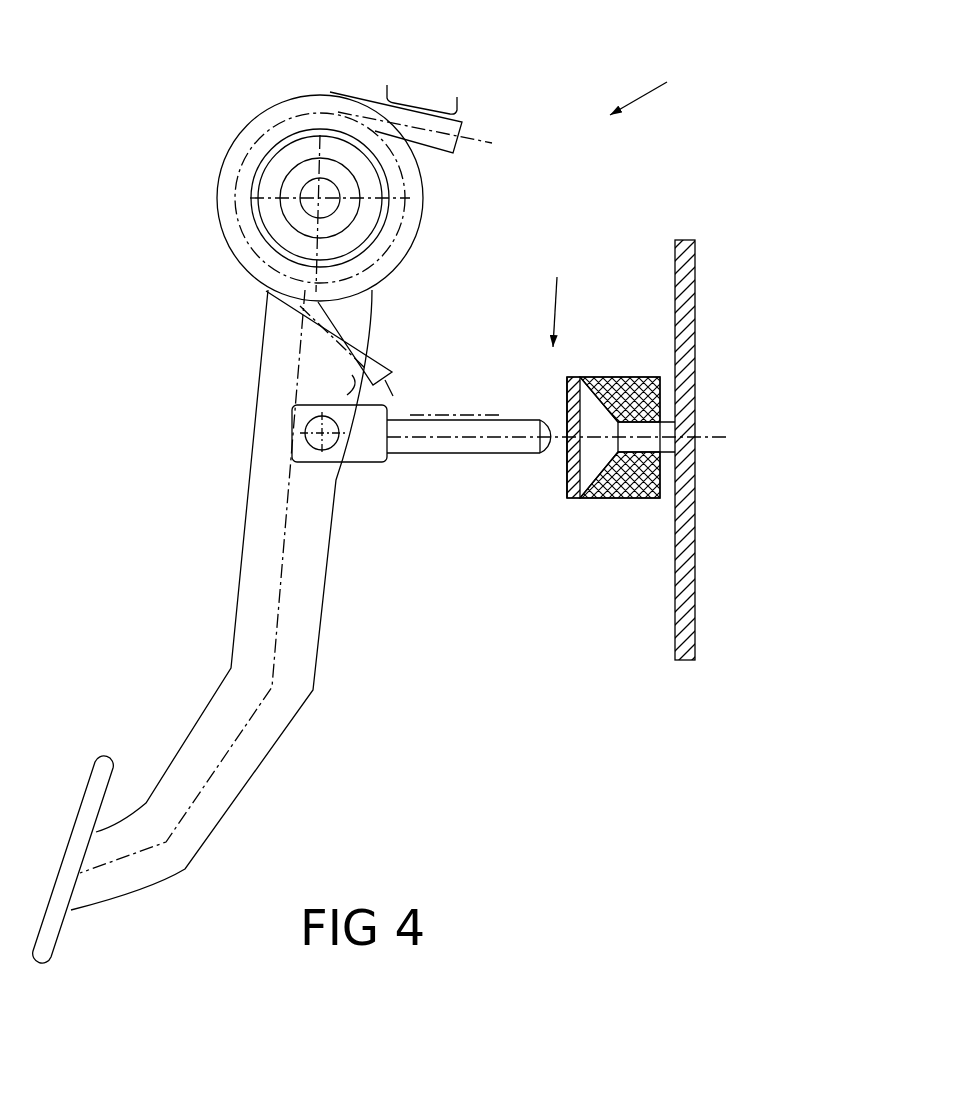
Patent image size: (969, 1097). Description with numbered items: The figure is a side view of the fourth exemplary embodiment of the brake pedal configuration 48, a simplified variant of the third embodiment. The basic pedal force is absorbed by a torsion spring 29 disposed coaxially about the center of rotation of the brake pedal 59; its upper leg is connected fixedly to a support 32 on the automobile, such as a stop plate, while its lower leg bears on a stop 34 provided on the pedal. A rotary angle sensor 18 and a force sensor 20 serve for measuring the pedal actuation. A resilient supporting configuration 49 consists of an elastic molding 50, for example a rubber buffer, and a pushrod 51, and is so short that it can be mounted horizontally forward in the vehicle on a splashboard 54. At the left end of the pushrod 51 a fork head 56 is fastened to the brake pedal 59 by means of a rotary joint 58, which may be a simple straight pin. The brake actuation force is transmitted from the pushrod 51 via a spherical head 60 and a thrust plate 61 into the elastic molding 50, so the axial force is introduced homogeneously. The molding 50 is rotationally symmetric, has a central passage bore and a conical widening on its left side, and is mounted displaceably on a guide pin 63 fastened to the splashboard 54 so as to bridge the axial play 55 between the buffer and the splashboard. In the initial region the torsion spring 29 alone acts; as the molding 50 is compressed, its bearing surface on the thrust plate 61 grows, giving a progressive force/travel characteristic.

The rotary angle sensor 18 is at (277, 206).
The force sensor 20 is at (455, 413).
The torsion spring 29 is at (223, 152).
The support 32 is at (380, 93).
The stop 34 is at (316, 350).
The brake pedal configuration 48 is at (666, 84).
The resilient supporting configuration 49 is at (570, 285).
The elastic molding 50 is at (603, 377).
The pushrod 51 is at (422, 455).
The splashboard 54 is at (697, 325).
The axial play 55 is at (665, 493).
The fork head 56 is at (356, 465).
The rotary joint 58 is at (305, 433).
The brake pedal 59 is at (243, 565).
The spherical head 60 is at (543, 458).
The thrust plate 61 is at (574, 487).
The guide pin 63 is at (655, 427).